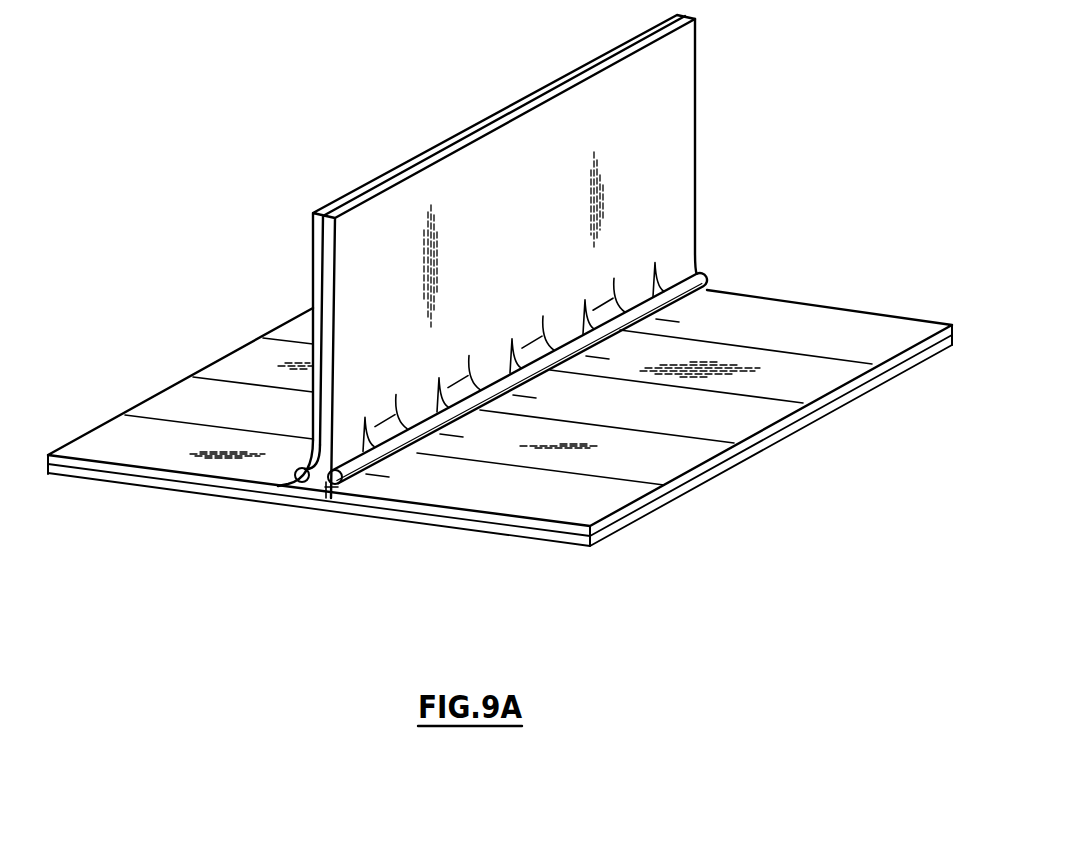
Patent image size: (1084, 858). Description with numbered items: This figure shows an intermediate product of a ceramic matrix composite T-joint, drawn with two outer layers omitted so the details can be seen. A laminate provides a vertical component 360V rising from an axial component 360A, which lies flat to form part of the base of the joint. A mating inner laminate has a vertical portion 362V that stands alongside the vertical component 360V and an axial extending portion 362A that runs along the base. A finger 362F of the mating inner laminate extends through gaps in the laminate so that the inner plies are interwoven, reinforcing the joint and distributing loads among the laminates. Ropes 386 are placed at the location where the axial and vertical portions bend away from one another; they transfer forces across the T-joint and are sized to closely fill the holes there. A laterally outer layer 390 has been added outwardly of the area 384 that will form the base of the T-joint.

The axial component 360A is at (598, 507).
The vertical component 360V is at (312, 287).
The axial extending portion 362A is at (157, 440).
The vertical portion 362V is at (495, 152).
The finger 362F is at (388, 425).
The area forming the base of the T-joint 384 is at (312, 497).
The ropes 386 is at (295, 485).
The laterally outer layer 390 is at (185, 487).